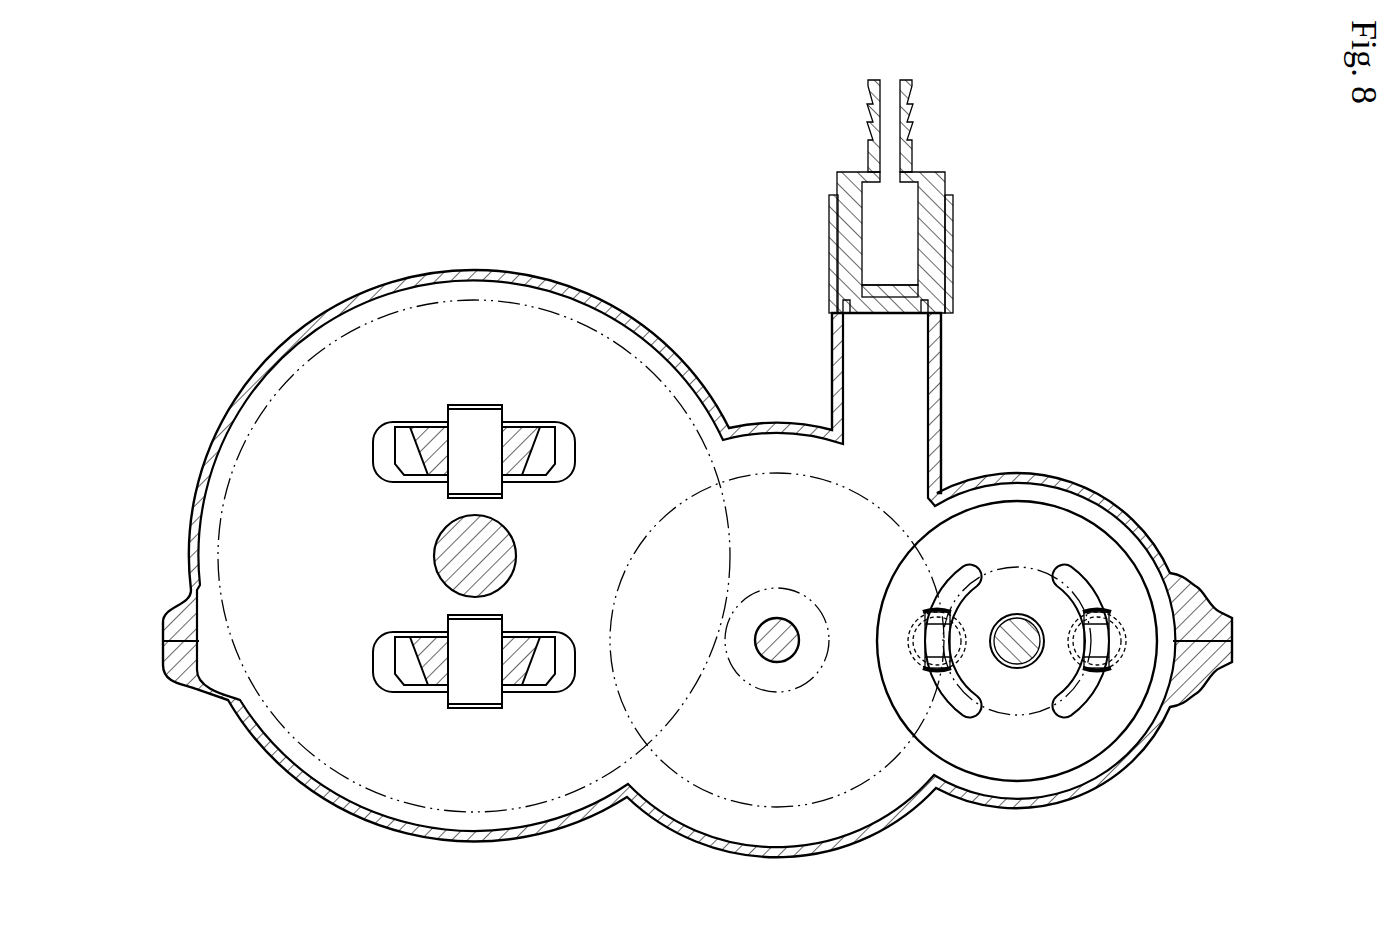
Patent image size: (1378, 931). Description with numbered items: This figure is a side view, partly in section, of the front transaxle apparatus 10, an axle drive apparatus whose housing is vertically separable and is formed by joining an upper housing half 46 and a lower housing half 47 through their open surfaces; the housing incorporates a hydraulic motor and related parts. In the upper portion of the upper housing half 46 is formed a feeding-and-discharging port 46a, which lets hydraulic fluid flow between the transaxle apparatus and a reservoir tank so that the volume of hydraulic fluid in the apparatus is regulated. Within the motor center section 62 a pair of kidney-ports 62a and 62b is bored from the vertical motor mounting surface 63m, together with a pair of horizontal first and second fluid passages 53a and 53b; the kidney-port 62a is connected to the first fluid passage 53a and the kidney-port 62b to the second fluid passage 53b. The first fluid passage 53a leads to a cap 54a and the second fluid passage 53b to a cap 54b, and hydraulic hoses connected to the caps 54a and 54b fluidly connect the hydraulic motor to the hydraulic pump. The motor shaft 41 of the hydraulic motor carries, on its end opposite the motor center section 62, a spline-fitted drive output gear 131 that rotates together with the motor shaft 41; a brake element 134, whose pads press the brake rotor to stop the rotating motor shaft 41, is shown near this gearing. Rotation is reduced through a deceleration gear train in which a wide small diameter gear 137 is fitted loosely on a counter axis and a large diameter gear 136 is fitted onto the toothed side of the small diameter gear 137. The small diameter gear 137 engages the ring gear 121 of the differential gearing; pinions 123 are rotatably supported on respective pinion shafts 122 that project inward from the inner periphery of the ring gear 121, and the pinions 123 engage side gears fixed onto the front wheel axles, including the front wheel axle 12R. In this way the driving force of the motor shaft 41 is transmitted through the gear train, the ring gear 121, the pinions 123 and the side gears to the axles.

The front transaxle apparatus 10 is at (1022, 340).
The front wheel axle 12R is at (517, 545).
The motor shaft 41 is at (1015, 613).
The upper housing half 46 is at (1230, 608).
The feeding-and-discharging port 46a is at (913, 130).
The lower housing half 47 is at (1228, 672).
The first fluid passage 53a is at (1088, 648).
The second fluid passage 53b is at (945, 648).
The cap 54a is at (1102, 660).
The cap 54b is at (924, 663).
The motor center section 62 is at (1104, 527).
The kidney-port 62a is at (1069, 712).
The kidney-port 62b is at (962, 712).
The motor mounting surface 63m is at (1068, 551).
The ring gear 121 is at (680, 724).
The pinion shaft 122 is at (480, 418).
The pinion 123 is at (543, 470).
The drive output gear 131 is at (995, 571).
The gear shaft 134 is at (797, 663).
The large diameter gear 136 is at (936, 574).
The small diameter gear 137 is at (683, 698).